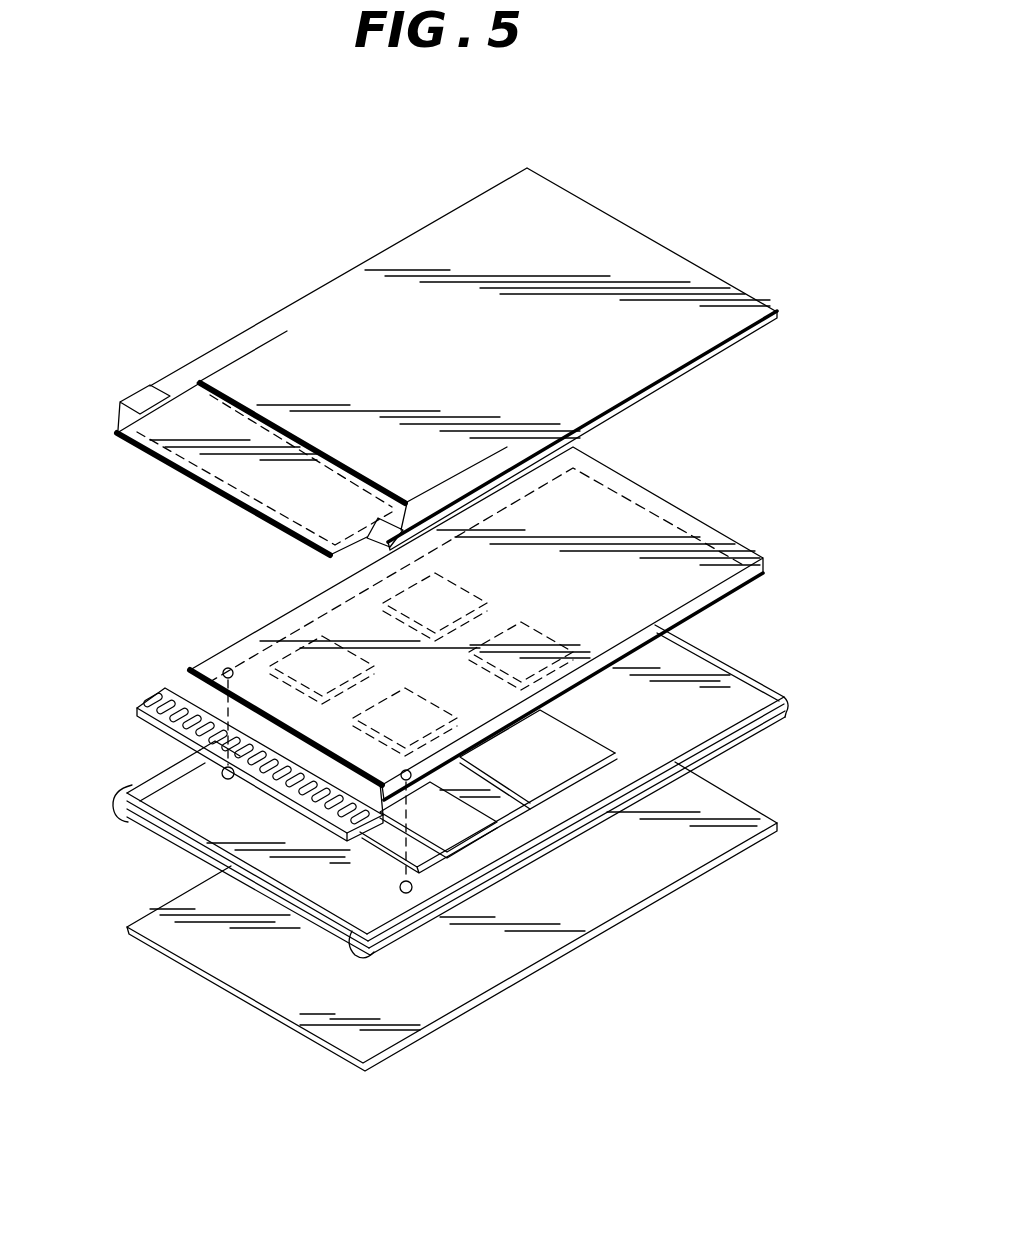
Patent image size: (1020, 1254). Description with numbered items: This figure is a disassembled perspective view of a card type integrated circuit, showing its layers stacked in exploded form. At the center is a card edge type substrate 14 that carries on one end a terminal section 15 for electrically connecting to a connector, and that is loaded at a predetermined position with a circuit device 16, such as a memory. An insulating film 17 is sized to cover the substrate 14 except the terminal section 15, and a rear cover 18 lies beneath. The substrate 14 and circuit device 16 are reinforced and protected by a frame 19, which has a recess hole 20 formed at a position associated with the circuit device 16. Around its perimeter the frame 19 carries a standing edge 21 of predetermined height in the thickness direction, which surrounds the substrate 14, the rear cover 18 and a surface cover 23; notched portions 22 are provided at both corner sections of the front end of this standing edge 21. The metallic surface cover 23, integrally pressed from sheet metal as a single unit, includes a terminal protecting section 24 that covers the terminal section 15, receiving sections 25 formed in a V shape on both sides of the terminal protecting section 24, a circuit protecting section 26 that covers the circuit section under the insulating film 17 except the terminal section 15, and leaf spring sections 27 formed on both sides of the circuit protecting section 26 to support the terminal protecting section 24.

The card edge type substrate 14 is at (192, 692).
The terminal section 15 is at (168, 735).
The circuit device 16 is at (495, 590).
The insulating film 17 is at (283, 610).
The rear cover 18 is at (232, 1000).
The frame 19 is at (738, 724).
The recess hole 20 is at (580, 750).
The standing edge 21 is at (733, 655).
The notched portions 22 is at (124, 822).
The metallic surface cover 23 is at (392, 250).
The terminal protecting section 24 is at (228, 468).
The receiving sections 25 is at (140, 397).
The circuit protecting section 26 is at (657, 368).
The leaf spring sections 27 is at (262, 330).